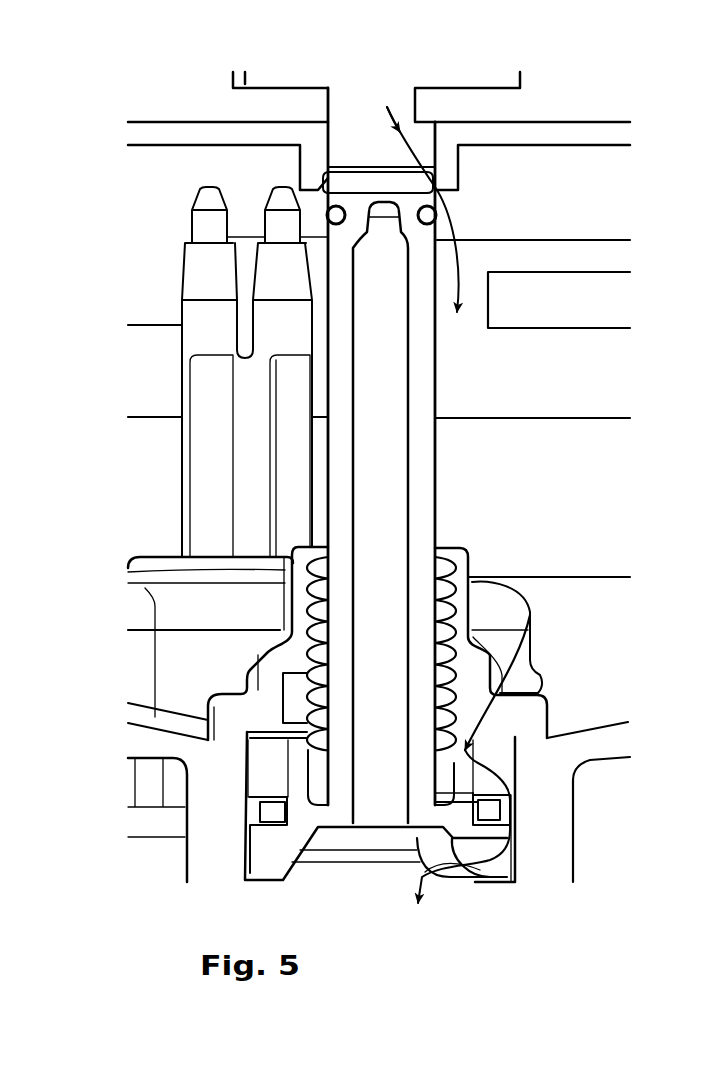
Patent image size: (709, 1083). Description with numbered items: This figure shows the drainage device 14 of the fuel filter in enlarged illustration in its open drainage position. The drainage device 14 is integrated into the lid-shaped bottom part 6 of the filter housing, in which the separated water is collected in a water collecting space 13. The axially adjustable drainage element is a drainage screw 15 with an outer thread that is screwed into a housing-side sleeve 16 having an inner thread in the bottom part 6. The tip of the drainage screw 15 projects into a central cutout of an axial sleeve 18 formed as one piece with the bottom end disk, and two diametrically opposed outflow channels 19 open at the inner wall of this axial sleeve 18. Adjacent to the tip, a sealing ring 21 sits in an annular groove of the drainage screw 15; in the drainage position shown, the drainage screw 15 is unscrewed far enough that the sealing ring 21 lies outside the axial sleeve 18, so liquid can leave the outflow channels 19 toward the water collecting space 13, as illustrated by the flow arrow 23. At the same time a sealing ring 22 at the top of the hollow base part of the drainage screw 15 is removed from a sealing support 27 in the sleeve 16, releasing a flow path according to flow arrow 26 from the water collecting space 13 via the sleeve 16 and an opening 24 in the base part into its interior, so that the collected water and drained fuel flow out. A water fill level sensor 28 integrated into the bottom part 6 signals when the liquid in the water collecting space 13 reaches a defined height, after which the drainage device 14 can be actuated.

The bottom part 6 is at (148, 740).
The water collecting space 13 is at (622, 697).
The drainage device 14 is at (397, 880).
The drainage screw 15 is at (423, 487).
The sleeve 16 is at (562, 815).
The axial sleeve 18 is at (450, 165).
The outflow channel 19 is at (196, 108).
The sealing ring 21 is at (436, 215).
The sealing ring 22 is at (495, 812).
The flow arrow 23 is at (457, 258).
The opening 24 is at (490, 867).
The flow arrow 26 is at (535, 606).
The sealing support 27 is at (488, 733).
The water fill level sensor 28 is at (182, 286).